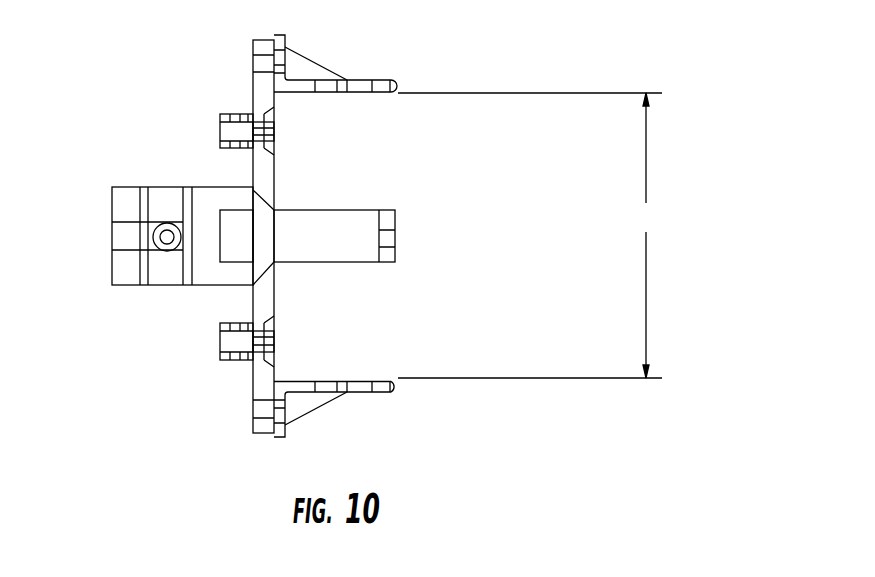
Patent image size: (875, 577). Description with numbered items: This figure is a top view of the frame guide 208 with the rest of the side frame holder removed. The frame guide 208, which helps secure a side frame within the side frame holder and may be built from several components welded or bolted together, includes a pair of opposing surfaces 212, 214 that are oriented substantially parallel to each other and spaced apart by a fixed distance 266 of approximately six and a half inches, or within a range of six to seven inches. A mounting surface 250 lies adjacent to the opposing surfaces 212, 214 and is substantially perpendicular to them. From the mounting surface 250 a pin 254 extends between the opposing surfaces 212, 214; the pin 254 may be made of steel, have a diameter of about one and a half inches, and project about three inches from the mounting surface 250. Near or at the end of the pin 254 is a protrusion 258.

The frame guide 208 is at (207, 277).
The opposing surface 212 is at (353, 93).
The opposing surface 214 is at (360, 380).
The mounting surface 250 is at (277, 173).
The pin 254 is at (322, 252).
The protrusion 258 is at (396, 232).
The fixed distance 266 is at (530, 235).